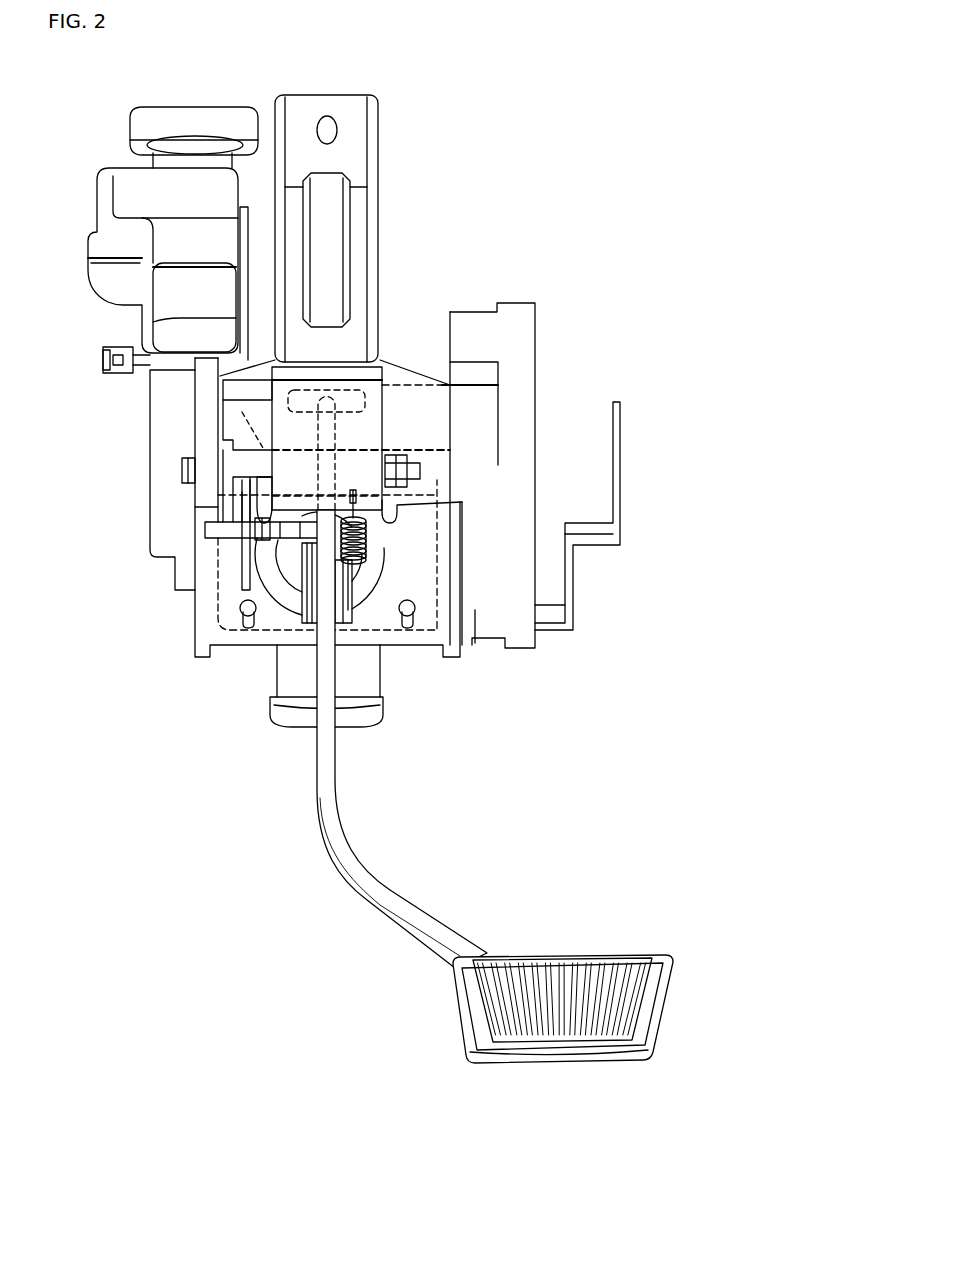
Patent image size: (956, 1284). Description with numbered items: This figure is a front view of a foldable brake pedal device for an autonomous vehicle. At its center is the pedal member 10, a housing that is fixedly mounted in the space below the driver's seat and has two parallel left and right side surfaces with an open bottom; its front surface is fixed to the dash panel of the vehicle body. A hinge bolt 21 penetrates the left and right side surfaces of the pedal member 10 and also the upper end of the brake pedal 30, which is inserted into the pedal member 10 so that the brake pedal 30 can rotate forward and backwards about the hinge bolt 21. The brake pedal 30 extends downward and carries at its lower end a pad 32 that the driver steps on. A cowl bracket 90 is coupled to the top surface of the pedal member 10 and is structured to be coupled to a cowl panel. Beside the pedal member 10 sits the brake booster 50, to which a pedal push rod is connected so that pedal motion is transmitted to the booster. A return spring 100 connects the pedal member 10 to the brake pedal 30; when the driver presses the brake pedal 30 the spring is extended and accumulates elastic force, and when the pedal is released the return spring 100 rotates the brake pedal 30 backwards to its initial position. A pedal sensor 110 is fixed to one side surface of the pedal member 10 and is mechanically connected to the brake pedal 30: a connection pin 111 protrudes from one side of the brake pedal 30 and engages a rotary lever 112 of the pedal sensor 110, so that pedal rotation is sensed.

The pedal member 10 is at (212, 630).
The hinge bolt 21 is at (420, 472).
The brake pedal 30 is at (320, 797).
The pad 32 is at (565, 1027).
The brake booster 50 is at (523, 385).
The cowl bracket 90 is at (347, 162).
The return spring 100 is at (365, 555).
The pedal sensor 110 is at (207, 431).
The connection pin 111 is at (215, 530).
The rotary lever 112 is at (247, 570).